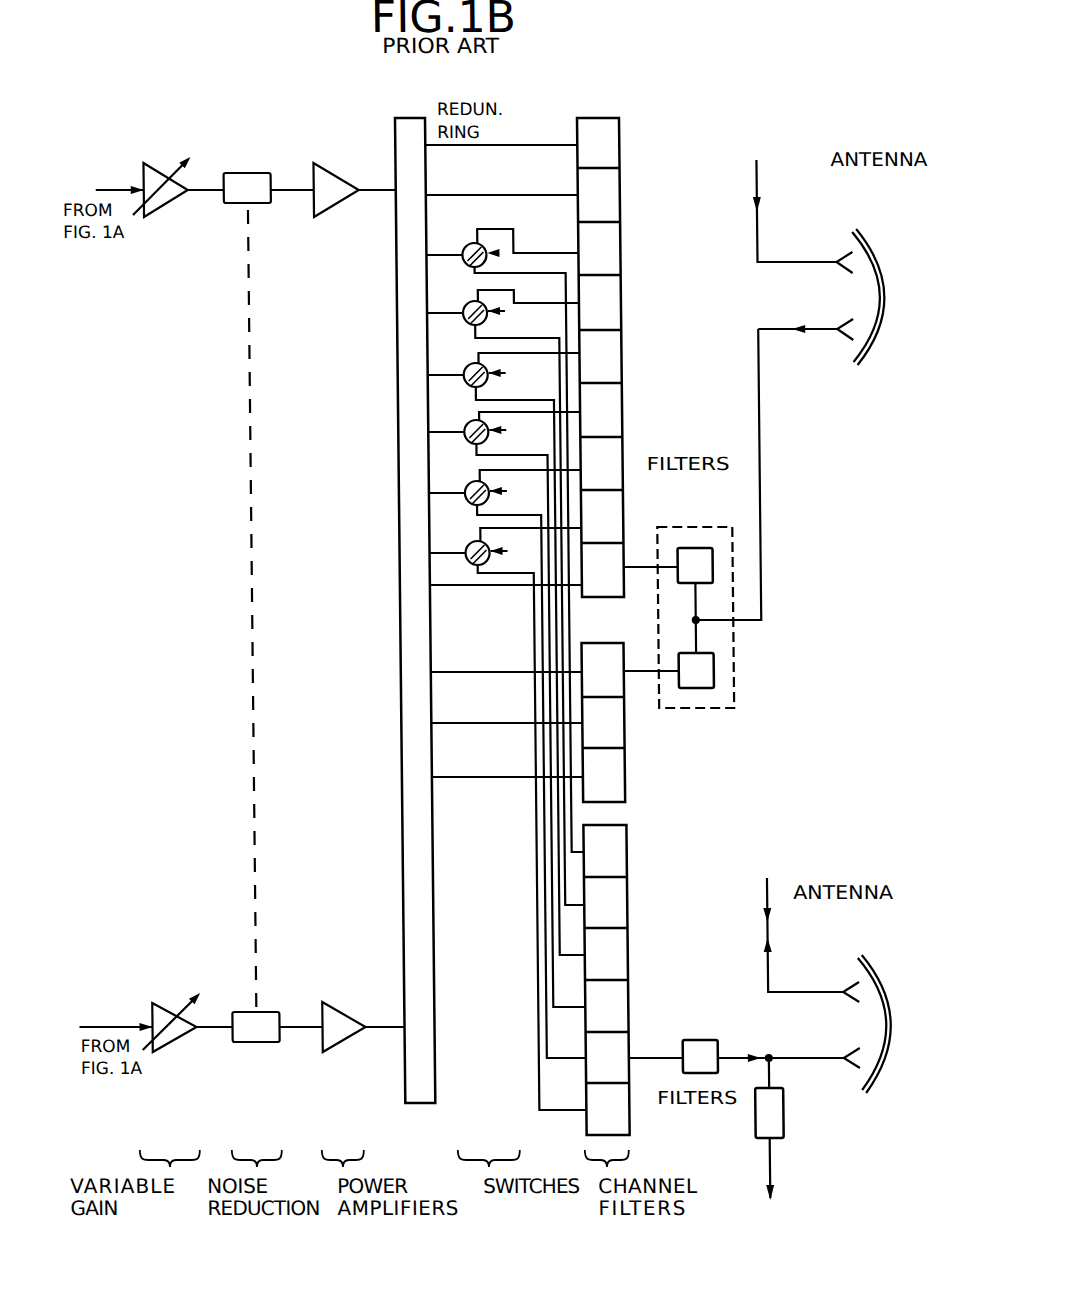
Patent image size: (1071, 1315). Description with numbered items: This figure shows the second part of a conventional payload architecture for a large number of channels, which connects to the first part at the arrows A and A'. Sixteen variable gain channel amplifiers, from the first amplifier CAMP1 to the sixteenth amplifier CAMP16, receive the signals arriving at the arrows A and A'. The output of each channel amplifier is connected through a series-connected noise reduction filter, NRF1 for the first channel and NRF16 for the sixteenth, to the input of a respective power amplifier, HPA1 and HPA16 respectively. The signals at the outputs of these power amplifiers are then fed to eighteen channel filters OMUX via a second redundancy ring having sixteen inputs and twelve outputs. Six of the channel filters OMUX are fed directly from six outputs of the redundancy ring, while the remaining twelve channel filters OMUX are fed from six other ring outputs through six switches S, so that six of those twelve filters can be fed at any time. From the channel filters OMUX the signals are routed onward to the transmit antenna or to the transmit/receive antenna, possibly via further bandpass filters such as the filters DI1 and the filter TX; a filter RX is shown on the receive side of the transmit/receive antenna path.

The connection arrow A is at (109, 172).
The connection arrow A' is at (115, 1010).
The variable gain channel amplifier CAMP1 is at (160, 168).
The noise reduction filter NRF1 is at (253, 180).
The power amplifier HPA1 is at (332, 178).
The variable gain channel amplifier CAMP16 is at (165, 1035).
The noise reduction filter NRF16 is at (247, 1035).
The power amplifier HPA16 is at (328, 1035).
The channel filter OMUX is at (597, 113).
The switch S is at (466, 245).
The bandpass filter DI1 is at (694, 527).
The bandpass filter TX is at (700, 1041).
The receive filter RX is at (775, 1117).